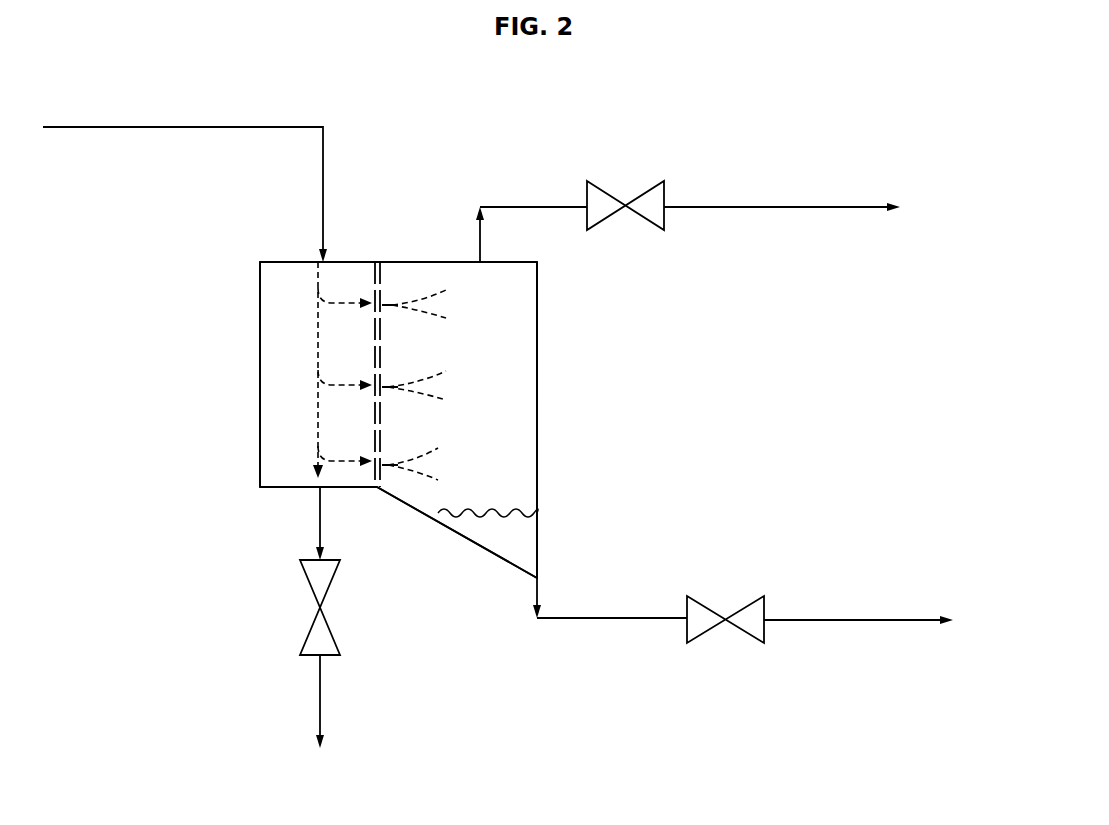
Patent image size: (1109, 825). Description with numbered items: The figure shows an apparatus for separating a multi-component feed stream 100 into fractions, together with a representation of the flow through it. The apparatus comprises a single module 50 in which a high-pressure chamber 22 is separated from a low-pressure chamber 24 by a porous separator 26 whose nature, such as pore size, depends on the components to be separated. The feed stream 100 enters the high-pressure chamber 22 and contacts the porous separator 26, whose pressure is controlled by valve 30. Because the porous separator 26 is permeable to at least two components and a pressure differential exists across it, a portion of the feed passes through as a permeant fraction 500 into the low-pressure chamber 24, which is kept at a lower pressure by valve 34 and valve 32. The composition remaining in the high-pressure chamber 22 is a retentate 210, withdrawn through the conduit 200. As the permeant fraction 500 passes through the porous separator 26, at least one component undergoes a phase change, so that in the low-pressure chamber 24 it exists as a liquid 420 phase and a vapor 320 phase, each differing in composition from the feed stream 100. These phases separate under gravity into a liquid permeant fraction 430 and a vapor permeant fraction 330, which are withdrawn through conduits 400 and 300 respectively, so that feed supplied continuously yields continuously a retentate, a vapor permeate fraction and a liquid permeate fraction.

The multi-component feed stream 100 is at (197, 127).
The high-pressure chamber 22 is at (275, 320).
The module 50 is at (260, 371).
The retentate 210 is at (320, 450).
The porous separator 26 is at (382, 277).
The permeant fraction 500 is at (388, 385).
The vapor phase 320 is at (452, 282).
The liquid phase 420 is at (452, 320).
The conduit 300 is at (522, 207).
The valve 32 is at (643, 193).
The vapor permeant fraction 330 is at (518, 314).
The low-pressure chamber 24 is at (517, 363).
The liquid permeant fraction 430 is at (515, 543).
The conduit 400 is at (625, 622).
The valve 34 is at (745, 605).
The conduit 200 is at (320, 523).
The valve 30 is at (310, 632).